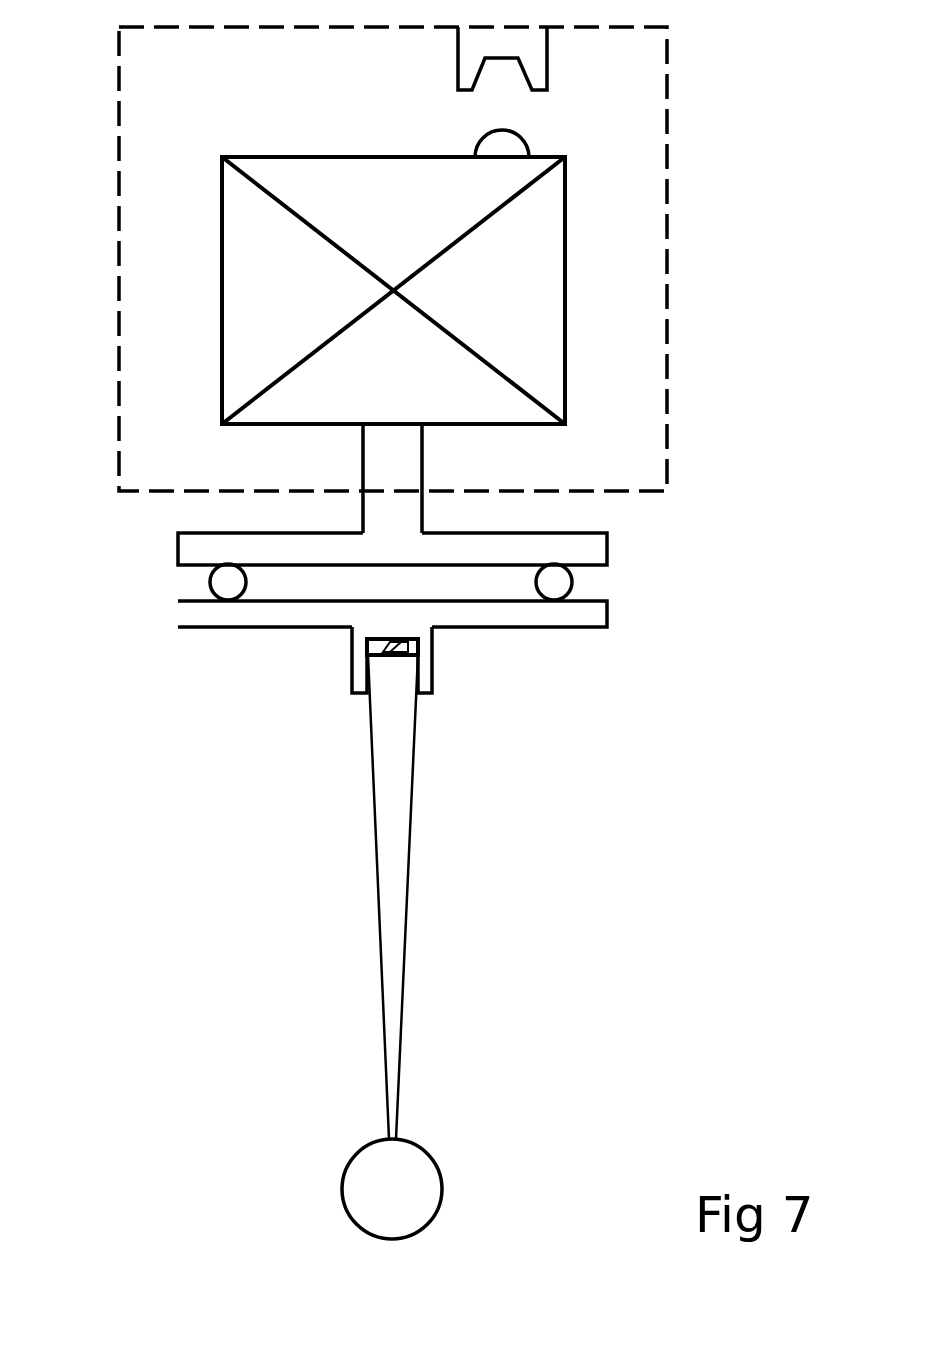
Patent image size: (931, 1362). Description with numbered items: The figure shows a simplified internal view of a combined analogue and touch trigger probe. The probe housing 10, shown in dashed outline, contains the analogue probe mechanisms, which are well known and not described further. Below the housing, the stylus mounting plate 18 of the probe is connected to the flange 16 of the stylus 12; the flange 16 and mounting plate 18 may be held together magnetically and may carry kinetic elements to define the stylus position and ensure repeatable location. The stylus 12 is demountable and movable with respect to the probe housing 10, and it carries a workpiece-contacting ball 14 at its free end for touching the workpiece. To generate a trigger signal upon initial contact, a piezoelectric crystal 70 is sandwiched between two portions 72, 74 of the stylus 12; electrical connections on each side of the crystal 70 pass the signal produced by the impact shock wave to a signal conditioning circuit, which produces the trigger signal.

The probe housing 10 is at (668, 252).
The stylus mounting plate 18 is at (315, 566).
The flange 16 is at (223, 612).
The portion of the stylus 72 is at (375, 627).
The piezoelectric crystal 70 is at (420, 648).
The portion of the stylus 74 is at (387, 665).
The stylus 12 is at (398, 770).
The workpiece-contacting ball 14 is at (413, 1163).